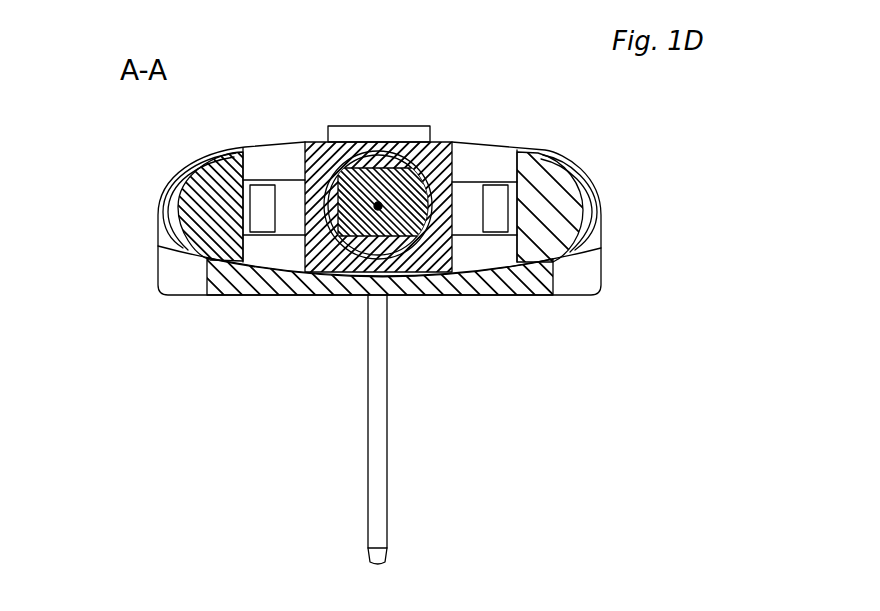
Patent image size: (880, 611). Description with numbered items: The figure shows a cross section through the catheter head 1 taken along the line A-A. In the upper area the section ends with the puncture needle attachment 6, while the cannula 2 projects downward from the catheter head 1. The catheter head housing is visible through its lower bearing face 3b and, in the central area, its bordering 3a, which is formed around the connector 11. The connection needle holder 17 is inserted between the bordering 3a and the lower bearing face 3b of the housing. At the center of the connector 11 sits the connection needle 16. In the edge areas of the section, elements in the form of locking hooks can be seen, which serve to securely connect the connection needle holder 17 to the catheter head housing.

The catheter head 1 is at (148, 333).
The cannula 2 is at (375, 460).
The bordering 3a is at (372, 248).
The lower bearing face 3b is at (528, 290).
The puncture needle attachment 6 is at (385, 141).
The connector 11 is at (453, 146).
The connection needle 16 is at (448, 124).
The connection needle holder 17 is at (412, 265).